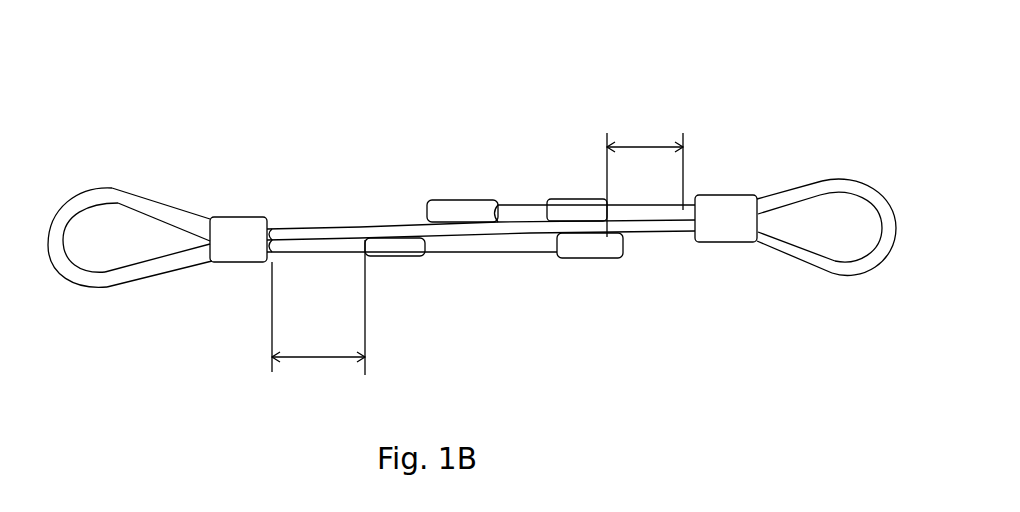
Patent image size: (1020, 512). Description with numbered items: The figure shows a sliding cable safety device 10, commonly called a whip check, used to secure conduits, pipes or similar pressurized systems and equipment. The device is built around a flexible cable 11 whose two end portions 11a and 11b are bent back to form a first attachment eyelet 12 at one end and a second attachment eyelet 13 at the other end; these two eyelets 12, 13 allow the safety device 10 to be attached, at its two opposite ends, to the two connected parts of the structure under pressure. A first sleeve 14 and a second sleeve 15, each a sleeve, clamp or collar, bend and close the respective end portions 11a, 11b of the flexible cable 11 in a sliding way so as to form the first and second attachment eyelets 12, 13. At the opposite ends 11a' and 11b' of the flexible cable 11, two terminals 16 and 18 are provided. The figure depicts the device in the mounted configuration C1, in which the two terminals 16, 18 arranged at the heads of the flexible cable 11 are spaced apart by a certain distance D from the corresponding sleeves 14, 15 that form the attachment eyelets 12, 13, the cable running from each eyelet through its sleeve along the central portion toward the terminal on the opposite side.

The safety device 10 is at (294, 128).
The flexible cable 11 is at (353, 228).
The end portion 11a is at (166, 190).
The end portion 11b is at (803, 296).
The end of the flexible cable 11a' is at (412, 305).
The end of the flexible cable 11b' is at (589, 142).
The first attachment eyelet 12 is at (126, 197).
The second attachment eyelet 13 is at (820, 180).
The first sleeve 14 is at (248, 220).
The second sleeve 15 is at (728, 205).
The terminal 16 is at (398, 252).
The terminal 18 is at (450, 208).
The configuration C1 is at (723, 119).
The distance D is at (320, 358).